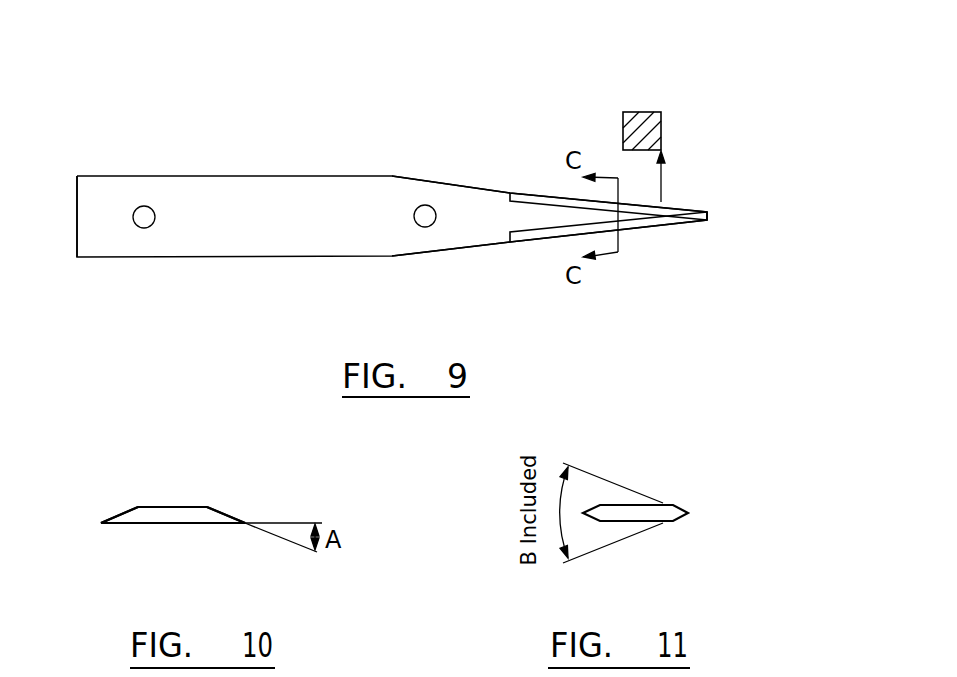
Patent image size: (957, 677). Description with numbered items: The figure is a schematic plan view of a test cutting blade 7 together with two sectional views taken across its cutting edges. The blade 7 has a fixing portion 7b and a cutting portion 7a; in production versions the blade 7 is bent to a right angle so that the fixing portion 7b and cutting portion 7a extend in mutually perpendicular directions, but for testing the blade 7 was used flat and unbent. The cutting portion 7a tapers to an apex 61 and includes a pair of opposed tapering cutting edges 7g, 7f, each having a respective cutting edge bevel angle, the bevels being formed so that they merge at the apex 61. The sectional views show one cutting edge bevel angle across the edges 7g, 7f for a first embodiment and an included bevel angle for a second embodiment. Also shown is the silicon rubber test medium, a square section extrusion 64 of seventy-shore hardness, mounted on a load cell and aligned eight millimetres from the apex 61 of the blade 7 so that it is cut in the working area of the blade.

In FIG. 9, the cutting blade 7 is at (440, 193).
In FIG. 9, the fixing portion 7b is at (240, 173).
In FIG. 9, the cutting portion 7a is at (547, 178).
In FIG. 9, the cutting edge 7f is at (530, 191).
In FIG. 10, the cutting edge 7f is at (223, 510).
In FIG. 9, the cutting edge 7g is at (642, 228).
In FIG. 10, the cutting edge 7g is at (117, 510).
In FIG. 9, the apex 61 is at (708, 212).
In FIG. 9, the square section extrusion 64 is at (661, 128).